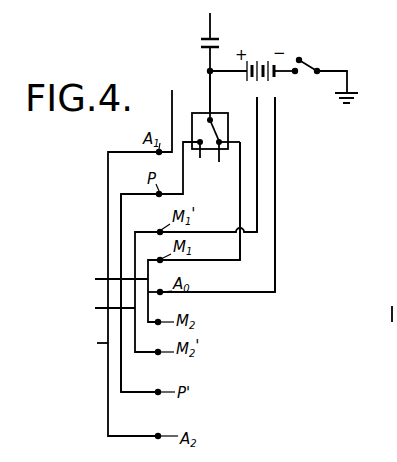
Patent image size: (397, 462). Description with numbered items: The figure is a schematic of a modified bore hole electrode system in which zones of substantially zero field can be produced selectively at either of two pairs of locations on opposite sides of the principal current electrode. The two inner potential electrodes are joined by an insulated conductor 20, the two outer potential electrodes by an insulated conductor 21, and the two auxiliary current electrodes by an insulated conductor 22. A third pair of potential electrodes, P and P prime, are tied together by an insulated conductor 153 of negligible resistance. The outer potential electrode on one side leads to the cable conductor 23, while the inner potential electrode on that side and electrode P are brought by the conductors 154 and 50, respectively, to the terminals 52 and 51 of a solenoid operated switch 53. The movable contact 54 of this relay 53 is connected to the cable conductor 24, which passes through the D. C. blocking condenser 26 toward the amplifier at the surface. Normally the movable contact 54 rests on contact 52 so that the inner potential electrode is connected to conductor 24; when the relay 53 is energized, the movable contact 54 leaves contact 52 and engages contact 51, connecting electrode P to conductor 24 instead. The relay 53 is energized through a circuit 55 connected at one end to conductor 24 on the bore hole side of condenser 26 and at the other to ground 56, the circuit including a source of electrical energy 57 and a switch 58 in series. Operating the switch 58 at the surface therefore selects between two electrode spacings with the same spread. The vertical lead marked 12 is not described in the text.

The D. C. blocking condenser 26 is at (203, 39).
The cable conductor 24 is at (210, 90).
The source of electrical energy 57 is at (258, 61).
The switch 58 is at (307, 63).
The circuit 55 is at (295, 80).
The ground 56 is at (357, 93).
The solenoid operated switch 53 is at (195, 115).
The movable contact 54 is at (221, 138).
The terminal 51 is at (204, 161).
The terminal 52 is at (224, 163).
The conductor 50 is at (184, 190).
The conductor 12 is at (276, 173).
The cable conductor 23 is at (257, 210).
The insulated conductor 153 is at (122, 211).
The conductor 154 is at (240, 215).
The insulated conductor 20 is at (110, 281).
The insulated conductor 21 is at (105, 310).
The insulated conductor 22 is at (91, 344).